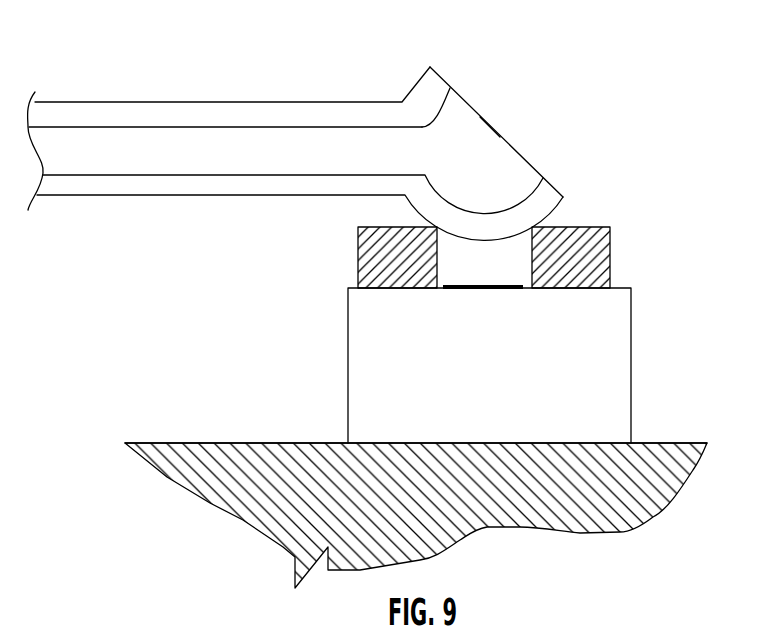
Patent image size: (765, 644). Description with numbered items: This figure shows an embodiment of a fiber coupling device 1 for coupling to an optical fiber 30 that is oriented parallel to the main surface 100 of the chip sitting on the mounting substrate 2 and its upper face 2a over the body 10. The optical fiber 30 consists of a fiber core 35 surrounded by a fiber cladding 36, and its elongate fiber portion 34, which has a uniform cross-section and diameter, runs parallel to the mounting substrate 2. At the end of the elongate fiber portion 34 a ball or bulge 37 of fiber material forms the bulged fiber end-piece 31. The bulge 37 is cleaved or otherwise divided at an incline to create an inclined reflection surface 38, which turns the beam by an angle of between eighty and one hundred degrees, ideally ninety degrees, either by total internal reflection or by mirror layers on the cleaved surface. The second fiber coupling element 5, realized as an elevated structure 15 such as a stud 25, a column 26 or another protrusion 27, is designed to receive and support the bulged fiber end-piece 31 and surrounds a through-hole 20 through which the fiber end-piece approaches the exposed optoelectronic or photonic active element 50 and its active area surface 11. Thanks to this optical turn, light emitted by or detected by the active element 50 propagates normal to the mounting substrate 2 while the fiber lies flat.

The fiber coupling device 1 is at (645, 55).
The mounting substrate 2 is at (160, 462).
The mounting surface of carrier 2a is at (237, 443).
The second fiber coupling element 5 is at (540, 225).
The housing base 10 is at (617, 388).
The active area surface 11 is at (493, 324).
The elevated structure 15 is at (540, 225).
The through-hole 20 is at (475, 255).
The stud 25 is at (540, 225).
The column 26 is at (540, 225).
The protrusion 27 is at (597, 227).
The optical fiber 30 is at (229, 89).
The fiber end-piece 31 is at (492, 115).
The elongate fiber portion 34 is at (135, 140).
The fiber core 35 is at (243, 155).
The fiber cladding 36 is at (130, 188).
The bulge 37 is at (468, 117).
The inclined reflection surface 38 is at (495, 127).
The optoelectronic or photonic active element 50 is at (482, 292).
The main surface 100 is at (600, 277).